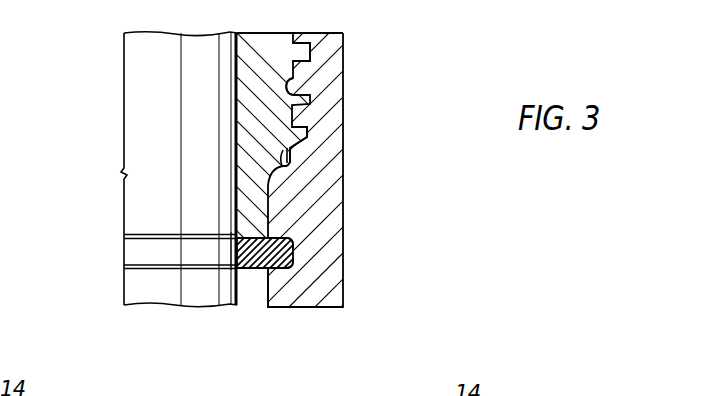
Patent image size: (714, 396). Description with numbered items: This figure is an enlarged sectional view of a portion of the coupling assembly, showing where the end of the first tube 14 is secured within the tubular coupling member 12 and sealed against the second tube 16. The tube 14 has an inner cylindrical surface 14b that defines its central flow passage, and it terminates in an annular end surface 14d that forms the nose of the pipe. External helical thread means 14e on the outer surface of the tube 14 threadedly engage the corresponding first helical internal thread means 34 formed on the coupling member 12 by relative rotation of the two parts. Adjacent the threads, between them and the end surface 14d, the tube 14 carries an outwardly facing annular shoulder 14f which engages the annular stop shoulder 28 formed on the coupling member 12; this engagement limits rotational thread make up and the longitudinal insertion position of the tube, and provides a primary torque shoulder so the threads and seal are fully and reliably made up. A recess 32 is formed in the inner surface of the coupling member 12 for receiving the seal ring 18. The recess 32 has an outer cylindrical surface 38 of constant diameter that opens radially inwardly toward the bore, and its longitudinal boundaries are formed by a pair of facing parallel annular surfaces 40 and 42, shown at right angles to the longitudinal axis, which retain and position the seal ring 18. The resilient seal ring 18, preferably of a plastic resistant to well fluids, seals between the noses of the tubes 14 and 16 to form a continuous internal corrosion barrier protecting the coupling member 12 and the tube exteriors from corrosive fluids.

The coupling member 12 is at (330, 189).
The tube 14 is at (253, 103).
The inner cylindrical surface 14b is at (237, 72).
The annular end surface 14d is at (235, 243).
The external helical thread means 14e is at (311, 52).
The outwardly facing annular shoulder 14f is at (283, 167).
The tube 16 is at (260, 298).
The seal ring 18 is at (232, 258).
The annular stop shoulder 28 is at (308, 138).
The recess 32 is at (250, 272).
The first helical internal thread means 34 is at (293, 106).
The outer cylindrical surface 38 is at (295, 258).
The annular surface 40 is at (295, 240).
The annular surface 42 is at (283, 270).